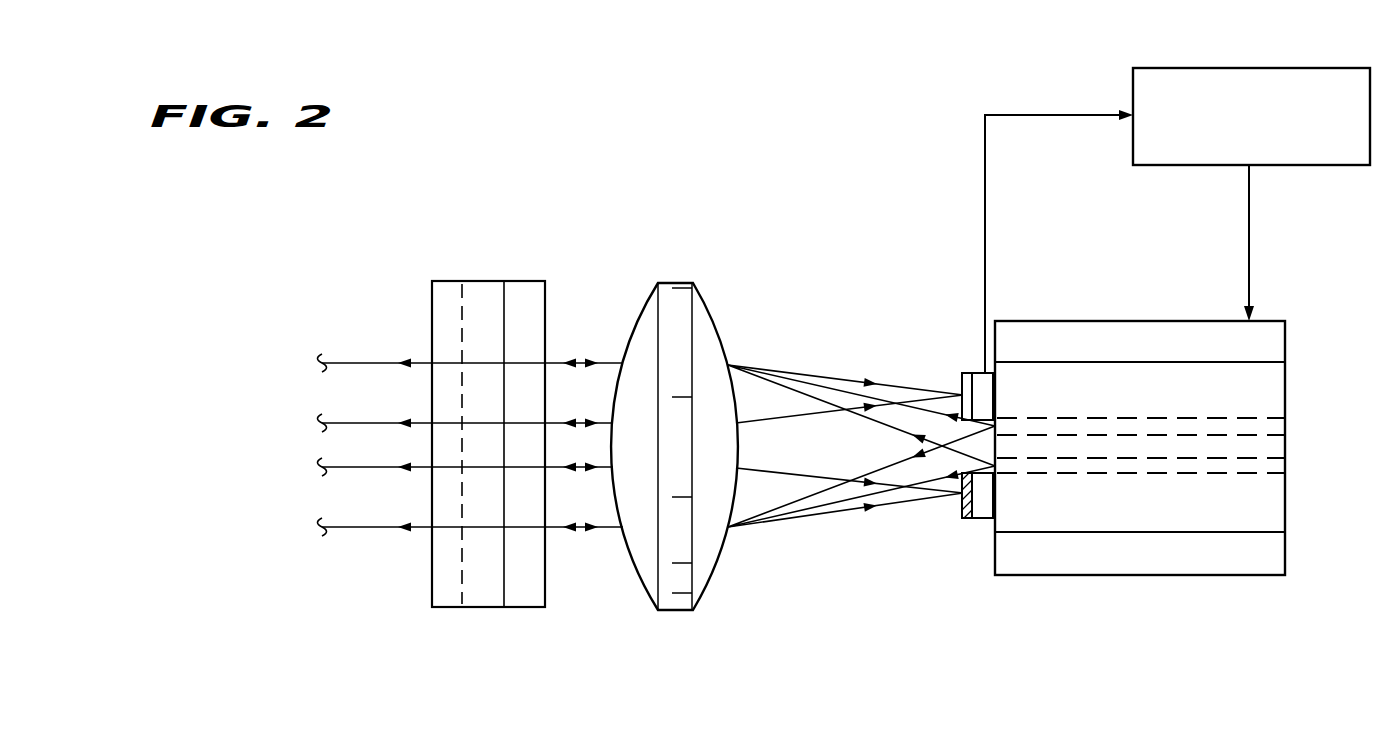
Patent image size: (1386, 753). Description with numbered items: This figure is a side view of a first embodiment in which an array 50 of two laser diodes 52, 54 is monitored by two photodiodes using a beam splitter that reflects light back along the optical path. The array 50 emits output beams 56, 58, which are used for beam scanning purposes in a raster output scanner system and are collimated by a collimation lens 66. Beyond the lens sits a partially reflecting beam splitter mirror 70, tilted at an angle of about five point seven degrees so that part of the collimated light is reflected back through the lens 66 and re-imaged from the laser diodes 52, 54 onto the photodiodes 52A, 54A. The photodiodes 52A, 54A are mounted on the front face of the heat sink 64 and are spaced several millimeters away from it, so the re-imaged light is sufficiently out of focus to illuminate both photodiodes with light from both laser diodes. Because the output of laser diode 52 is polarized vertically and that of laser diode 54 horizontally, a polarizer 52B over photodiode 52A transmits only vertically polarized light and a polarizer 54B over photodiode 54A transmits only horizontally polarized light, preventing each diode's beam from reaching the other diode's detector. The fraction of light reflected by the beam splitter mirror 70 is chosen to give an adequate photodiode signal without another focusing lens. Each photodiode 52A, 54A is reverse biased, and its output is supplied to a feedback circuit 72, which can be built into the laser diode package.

The array 50 is at (1140, 217).
The laser diode 52 is at (1127, 473).
The photodiode 52A is at (973, 518).
The polarizer 52B is at (960, 508).
The laser diode 54 is at (1125, 418).
The photodiode 54A is at (978, 373).
The polarizer 54B is at (960, 393).
The output beam 56 is at (773, 395).
The output beam 58 is at (845, 503).
The heat sink 64 is at (1207, 330).
The collimation lens 66 is at (680, 282).
The partially reflecting beam splitter mirror 70 is at (525, 282).
The feedback circuit 72 is at (1263, 68).